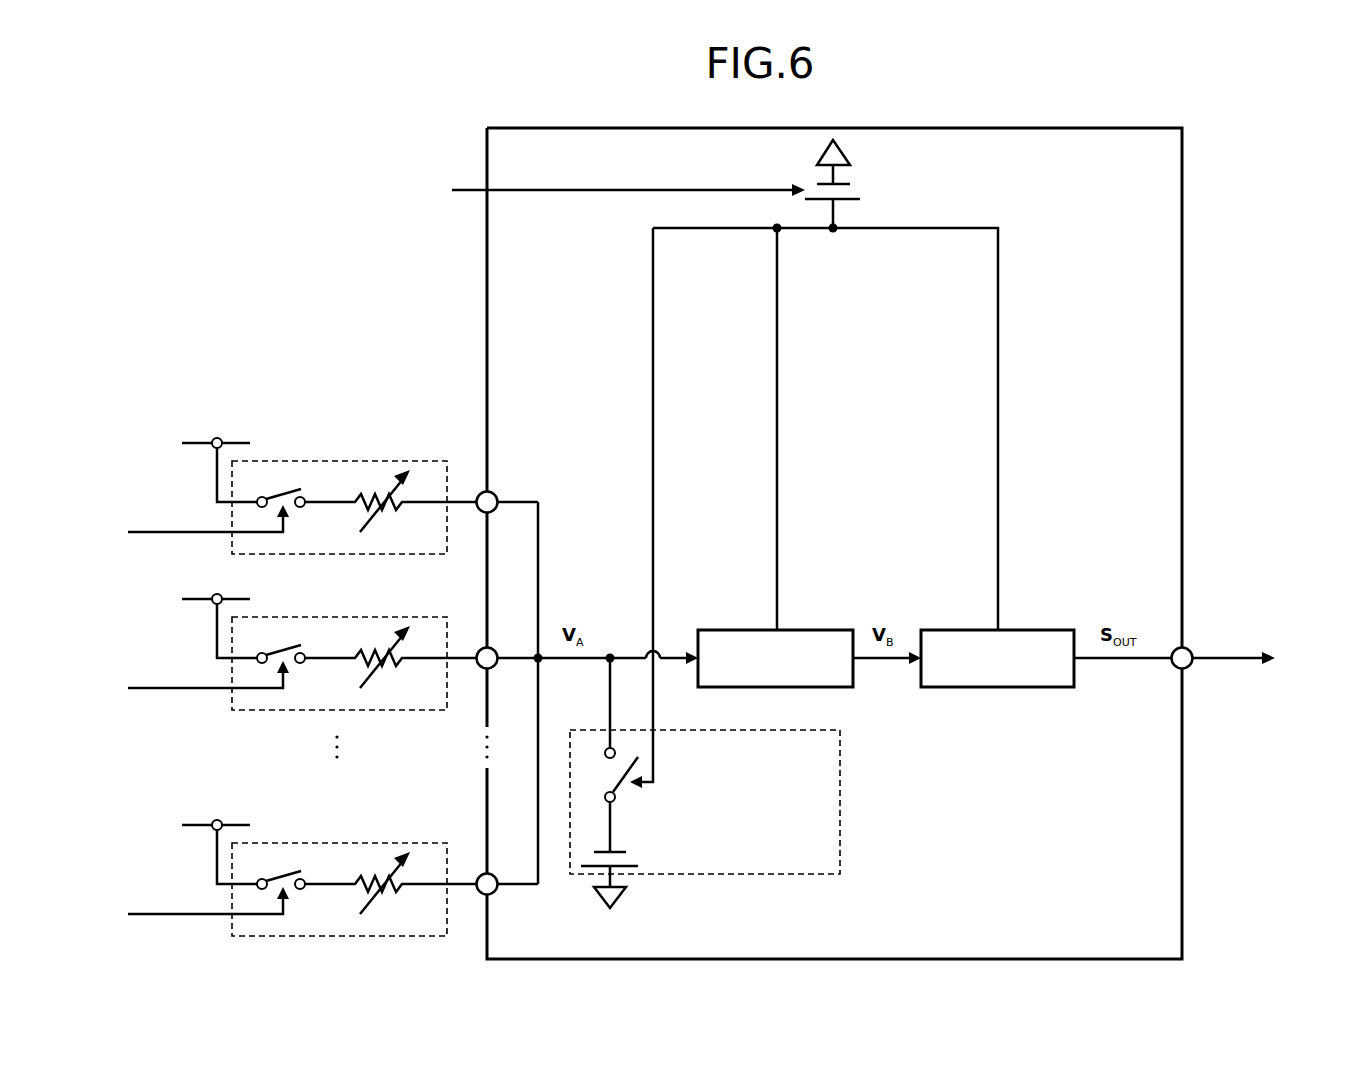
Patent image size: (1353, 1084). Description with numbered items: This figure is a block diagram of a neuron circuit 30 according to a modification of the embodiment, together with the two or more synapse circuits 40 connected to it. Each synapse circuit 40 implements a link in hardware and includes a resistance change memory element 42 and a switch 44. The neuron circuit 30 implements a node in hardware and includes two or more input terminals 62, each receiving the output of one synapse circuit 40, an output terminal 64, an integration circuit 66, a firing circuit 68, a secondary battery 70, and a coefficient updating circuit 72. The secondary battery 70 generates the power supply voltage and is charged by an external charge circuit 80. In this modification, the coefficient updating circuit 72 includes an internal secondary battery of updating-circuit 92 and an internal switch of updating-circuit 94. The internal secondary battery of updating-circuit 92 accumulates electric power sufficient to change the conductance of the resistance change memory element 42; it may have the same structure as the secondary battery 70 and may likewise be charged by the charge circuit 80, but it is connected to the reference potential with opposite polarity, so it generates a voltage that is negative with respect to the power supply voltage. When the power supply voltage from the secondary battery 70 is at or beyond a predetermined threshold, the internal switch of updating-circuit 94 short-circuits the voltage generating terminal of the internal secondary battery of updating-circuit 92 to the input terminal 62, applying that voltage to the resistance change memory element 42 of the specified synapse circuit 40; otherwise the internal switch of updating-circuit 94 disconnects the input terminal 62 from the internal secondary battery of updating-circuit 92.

The neuron circuit 30 is at (1130, 128).
The synapse circuit 40 is at (302, 675).
The resistance change memory element 42 is at (390, 664).
The switch 44 is at (243, 652).
The input terminal 62 is at (508, 669).
The output terminal 64 is at (1190, 650).
The integration circuit 66 is at (801, 630).
The firing circuit 68 is at (1022, 630).
The secondary battery 70 is at (860, 200).
The coefficient updating circuit 72 is at (686, 795).
The charge circuit 80 is at (612, 190).
The internal secondary battery of updating-circuit 92 is at (630, 866).
The internal switch of updating-circuit 94 is at (607, 772).